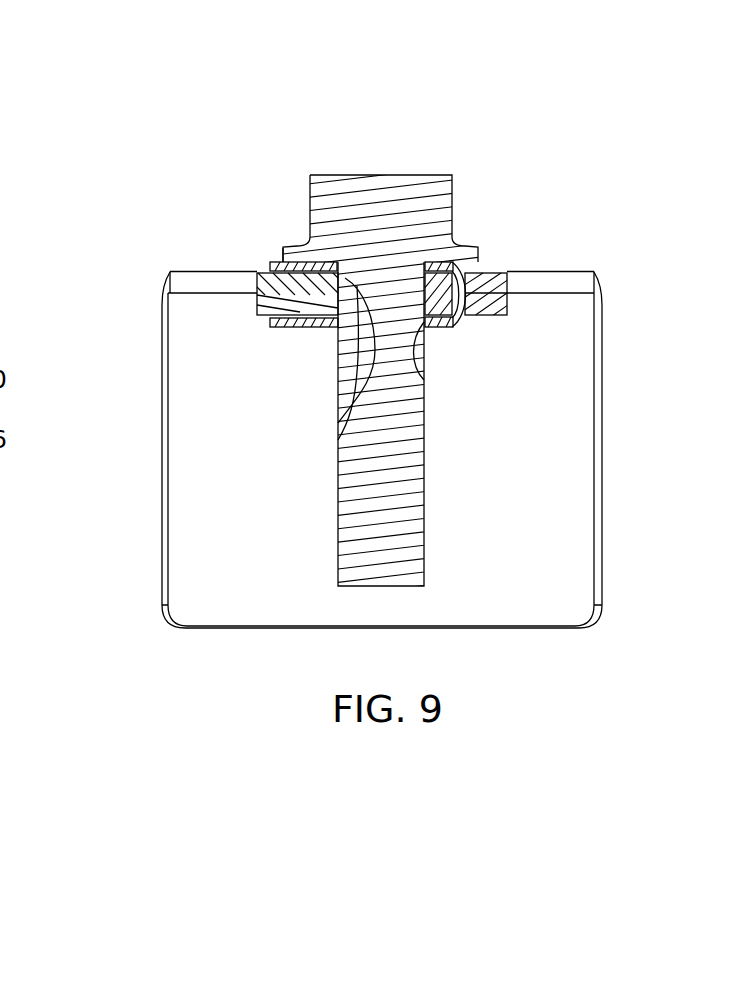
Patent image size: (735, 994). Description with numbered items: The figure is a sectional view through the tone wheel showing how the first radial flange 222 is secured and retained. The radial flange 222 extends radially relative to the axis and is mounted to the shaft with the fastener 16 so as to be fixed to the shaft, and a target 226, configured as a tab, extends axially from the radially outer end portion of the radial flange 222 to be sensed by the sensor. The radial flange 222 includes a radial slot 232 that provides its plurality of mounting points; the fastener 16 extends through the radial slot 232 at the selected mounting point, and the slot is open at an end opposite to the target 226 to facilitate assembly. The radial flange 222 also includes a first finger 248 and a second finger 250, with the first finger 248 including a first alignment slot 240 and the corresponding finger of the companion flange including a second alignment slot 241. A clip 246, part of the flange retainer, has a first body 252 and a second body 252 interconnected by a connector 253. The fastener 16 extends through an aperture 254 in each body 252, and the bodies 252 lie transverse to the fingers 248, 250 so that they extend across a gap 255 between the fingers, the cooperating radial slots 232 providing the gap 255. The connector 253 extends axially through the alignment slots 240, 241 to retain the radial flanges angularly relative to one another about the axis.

The fastener 16 is at (340, 207).
The first radial flange 222 is at (576, 229).
The target 226 is at (602, 549).
The radial slot 232 is at (338, 440).
The first alignment slot 240 is at (473, 248).
The second alignment slot 241 is at (468, 314).
The clip 246 is at (254, 242).
The first finger 248 is at (530, 271).
The second finger 250 is at (257, 289).
The body 252 is at (275, 262).
The connector 253 is at (466, 273).
The aperture 254 is at (425, 283).
The gap 255 is at (423, 284).